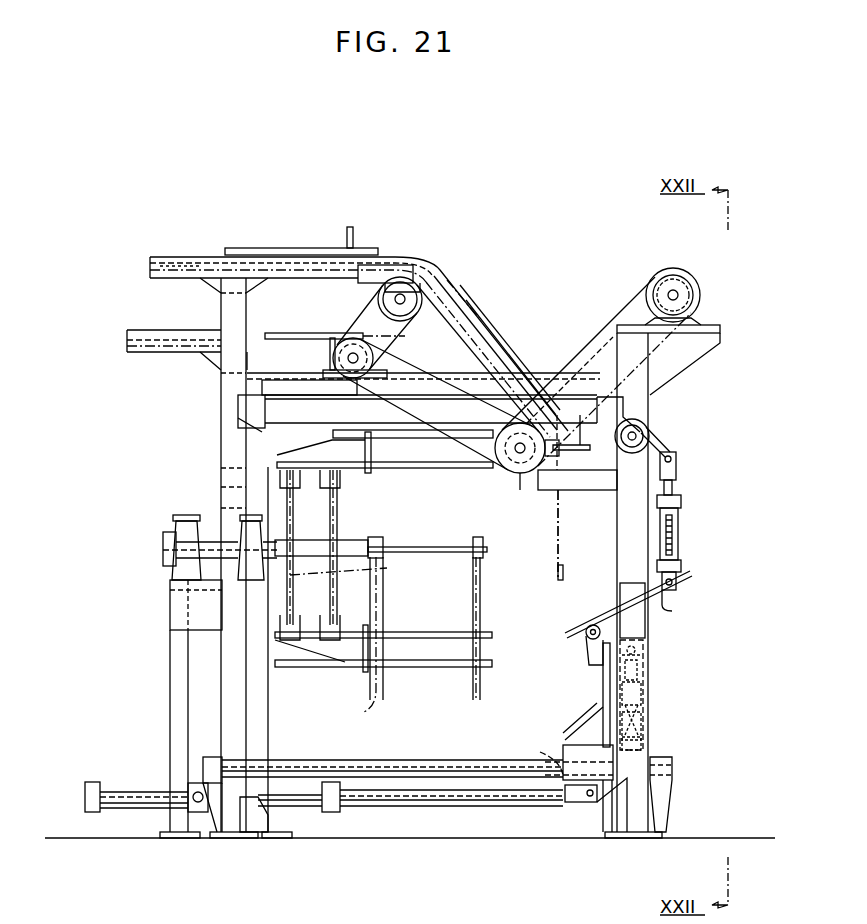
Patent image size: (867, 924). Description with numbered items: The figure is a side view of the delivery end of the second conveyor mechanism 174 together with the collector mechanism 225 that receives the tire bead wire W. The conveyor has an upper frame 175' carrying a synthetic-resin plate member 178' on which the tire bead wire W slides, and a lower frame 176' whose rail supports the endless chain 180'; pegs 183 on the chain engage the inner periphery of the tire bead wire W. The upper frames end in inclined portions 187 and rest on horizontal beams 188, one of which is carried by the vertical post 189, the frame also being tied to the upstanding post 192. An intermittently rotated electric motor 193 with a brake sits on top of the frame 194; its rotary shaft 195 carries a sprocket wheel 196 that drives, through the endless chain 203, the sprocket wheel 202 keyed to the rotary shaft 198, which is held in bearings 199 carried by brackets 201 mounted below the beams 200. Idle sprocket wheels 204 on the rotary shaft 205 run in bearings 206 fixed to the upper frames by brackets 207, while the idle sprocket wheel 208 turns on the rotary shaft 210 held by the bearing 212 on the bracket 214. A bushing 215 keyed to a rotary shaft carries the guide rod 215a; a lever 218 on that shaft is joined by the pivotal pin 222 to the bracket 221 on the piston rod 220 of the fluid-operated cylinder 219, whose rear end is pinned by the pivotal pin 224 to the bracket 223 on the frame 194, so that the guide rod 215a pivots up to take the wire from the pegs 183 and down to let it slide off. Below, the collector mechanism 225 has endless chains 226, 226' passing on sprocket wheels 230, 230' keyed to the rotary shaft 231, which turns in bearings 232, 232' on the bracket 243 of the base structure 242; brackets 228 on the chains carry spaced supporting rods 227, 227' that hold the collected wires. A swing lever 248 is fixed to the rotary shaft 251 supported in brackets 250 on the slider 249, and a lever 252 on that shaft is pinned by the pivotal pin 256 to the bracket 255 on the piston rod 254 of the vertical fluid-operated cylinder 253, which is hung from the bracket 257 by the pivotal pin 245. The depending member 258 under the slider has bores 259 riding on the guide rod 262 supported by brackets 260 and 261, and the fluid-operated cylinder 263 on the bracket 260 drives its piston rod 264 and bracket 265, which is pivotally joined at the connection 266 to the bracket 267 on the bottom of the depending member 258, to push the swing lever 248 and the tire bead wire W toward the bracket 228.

The second conveyor mechanism 174 is at (438, 262).
The upper frame 175' is at (172, 288).
The lower frame 176' is at (174, 359).
The plate member 178' is at (359, 322).
The endless chain 180' is at (381, 309).
The peg 183 is at (353, 240).
The inclined portion 187 is at (495, 318).
The horizontal beam 188 is at (486, 345).
The vertical post 189 is at (221, 426).
The upstanding post 192 is at (268, 722).
The electric motor 193 is at (700, 280).
The frame 194 is at (648, 405).
The rotary shaft 195 is at (678, 296).
The sprocket wheel 196 is at (668, 278).
The rotary shaft 198 is at (518, 455).
The bearing 199 is at (508, 466).
The beam 200 is at (548, 392).
The bracket 201 is at (585, 490).
The sprocket wheel 202 is at (525, 475).
The endless chain 203 is at (622, 318).
The idle sprocket wheel 204 is at (378, 292).
The rotary shaft 205 is at (398, 306).
The bearing 206 is at (432, 298).
The bracket 207 is at (420, 260).
The idle sprocket wheel 208 is at (366, 338).
The rotary shaft 210 is at (378, 358).
The bearing 212 is at (325, 360).
The bracket 214 is at (330, 400).
The bushing 215 is at (648, 432).
The guide rod 215a is at (555, 555).
The lever 218 is at (668, 450).
The fluid-operated cylinder 219 is at (678, 535).
The piston rod 220 is at (681, 503).
The bracket 221 is at (672, 486).
The pivotal pin 222 is at (676, 460).
The bracket 223 is at (672, 611).
The pivotal pin 224 is at (676, 582).
The collector mechanism 225 is at (165, 670).
The endless chain 226 is at (361, 547).
The endless chain 226' is at (381, 558).
The supporting rod 227 is at (401, 658).
The supporting rod 227' is at (401, 628).
The bracket 228 is at (335, 667).
The sprocket wheel 230 is at (339, 547).
The sprocket wheel 230' is at (309, 664).
The rotary shaft 231 is at (163, 548).
The bearing 232 is at (158, 543).
The bearing 232' is at (214, 531).
The base structure 242 is at (168, 740).
The bracket 243 is at (195, 612).
The pivotal pin 245 is at (641, 712).
The swing lever 248 is at (603, 645).
The slider 249 is at (580, 722).
The bracket 250 is at (589, 652).
The rotary shaft 251 is at (590, 625).
The lever 252 is at (640, 648).
The fluid-operated cylinder 253 is at (641, 724).
The piston rod 254 is at (641, 690).
The bracket 255 is at (637, 670).
The pivotal pin 256 is at (641, 656).
The bracket 257 is at (641, 742).
The depending member 258 is at (575, 745).
The bore 259 is at (540, 748).
The bracket 260 is at (214, 812).
The bracket 261 is at (672, 790).
The guide rod 262 is at (408, 760).
The fluid-operated cylinder 263 is at (138, 795).
The piston rod 264 is at (358, 806).
The bracket 265 is at (572, 803).
The pivot pin 266 is at (591, 797).
The bracket 267 is at (617, 790).
The tire bead wire W is at (316, 248).